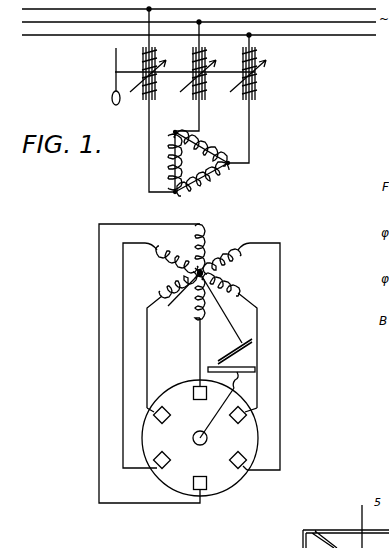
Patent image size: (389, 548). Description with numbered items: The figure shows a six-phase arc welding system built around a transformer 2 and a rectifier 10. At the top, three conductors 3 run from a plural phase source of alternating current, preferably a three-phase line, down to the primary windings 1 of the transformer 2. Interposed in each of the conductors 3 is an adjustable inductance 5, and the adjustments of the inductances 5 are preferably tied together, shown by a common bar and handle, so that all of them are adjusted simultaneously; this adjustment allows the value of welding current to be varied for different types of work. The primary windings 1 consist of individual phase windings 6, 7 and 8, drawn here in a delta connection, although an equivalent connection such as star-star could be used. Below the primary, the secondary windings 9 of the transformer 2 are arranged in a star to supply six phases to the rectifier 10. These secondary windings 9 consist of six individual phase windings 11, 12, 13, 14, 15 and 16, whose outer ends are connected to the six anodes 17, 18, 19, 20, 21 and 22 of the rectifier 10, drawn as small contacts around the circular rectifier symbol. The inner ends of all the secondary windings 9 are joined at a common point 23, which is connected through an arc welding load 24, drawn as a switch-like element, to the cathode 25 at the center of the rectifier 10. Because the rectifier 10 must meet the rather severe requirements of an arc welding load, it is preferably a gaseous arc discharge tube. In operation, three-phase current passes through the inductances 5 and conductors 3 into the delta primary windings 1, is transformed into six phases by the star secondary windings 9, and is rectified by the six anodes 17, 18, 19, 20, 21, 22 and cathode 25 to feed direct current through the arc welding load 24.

The primary windings 1 is at (216, 162).
The transformer 2 is at (271, 219).
The conductors 3 is at (150, 131).
The adjustable inductance 5 is at (157, 56).
The phase winding 6 is at (168, 167).
The phase winding 7 is at (216, 148).
The phase winding 8 is at (207, 186).
The secondary windings 9 is at (204, 363).
The rectifier 10 is at (205, 444).
The phase winding 11 is at (205, 247).
The phase winding 12 is at (230, 266).
The phase winding 13 is at (229, 300).
The phase winding 14 is at (198, 320).
The phase winding 15 is at (176, 283).
The phase winding 16 is at (185, 250).
The anode 17 is at (206, 477).
The anode 18 is at (232, 460).
The anode 19 is at (228, 426).
The anode 20 is at (207, 405).
The anode 21 is at (170, 428).
The anode 22 is at (172, 462).
The common point 23 is at (181, 298).
The arc welding load 24 is at (217, 360).
The cathode 25 is at (193, 437).